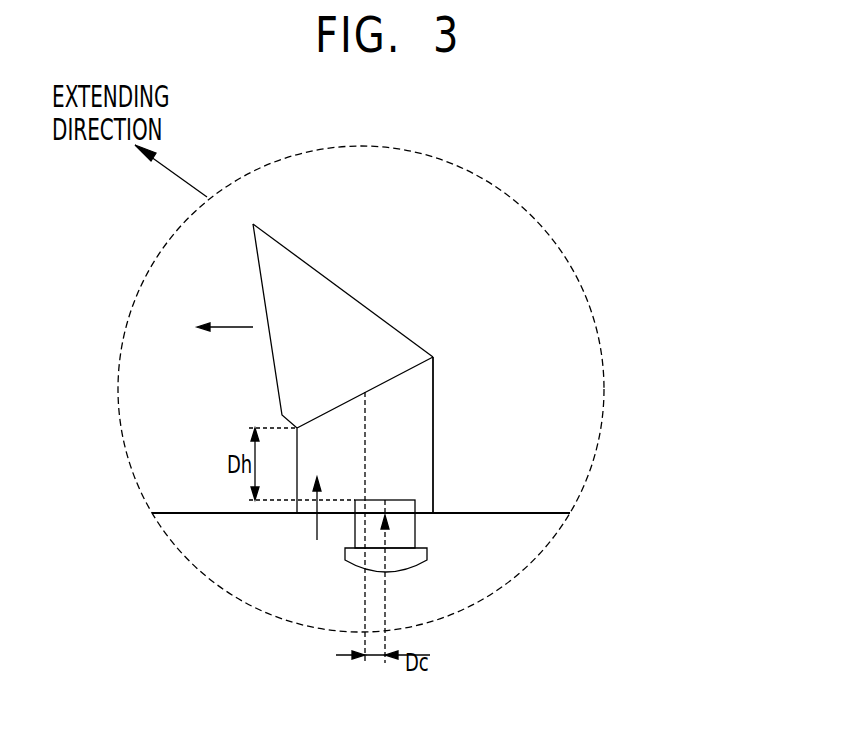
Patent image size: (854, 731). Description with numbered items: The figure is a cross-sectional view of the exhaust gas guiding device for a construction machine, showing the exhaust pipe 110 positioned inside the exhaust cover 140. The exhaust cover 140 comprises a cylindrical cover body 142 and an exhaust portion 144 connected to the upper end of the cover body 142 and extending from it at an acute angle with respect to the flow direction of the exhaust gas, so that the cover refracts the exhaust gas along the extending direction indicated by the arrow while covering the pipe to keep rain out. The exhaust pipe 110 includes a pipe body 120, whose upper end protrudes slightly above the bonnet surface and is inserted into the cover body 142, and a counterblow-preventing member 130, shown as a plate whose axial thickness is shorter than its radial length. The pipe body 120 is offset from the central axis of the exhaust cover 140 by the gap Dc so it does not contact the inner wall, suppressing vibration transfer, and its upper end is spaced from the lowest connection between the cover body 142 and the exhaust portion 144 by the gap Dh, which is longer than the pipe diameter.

The exhaust pipe 110 is at (440, 540).
The pipe body 120 is at (355, 520).
The counterblow-preventing member 130 is at (386, 499).
The exhaust cover 140 is at (412, 368).
The cover body 142 is at (475, 435).
The exhaust portion 144 is at (387, 317).